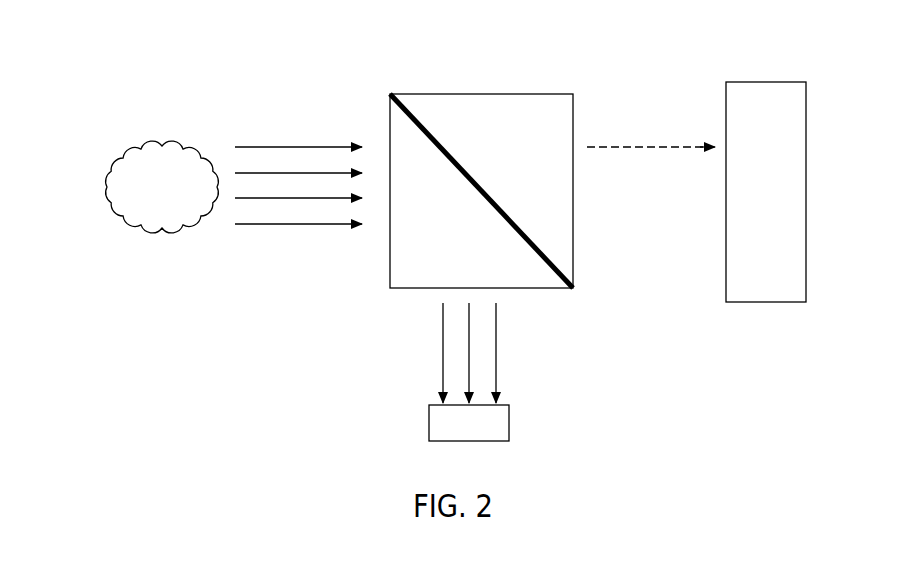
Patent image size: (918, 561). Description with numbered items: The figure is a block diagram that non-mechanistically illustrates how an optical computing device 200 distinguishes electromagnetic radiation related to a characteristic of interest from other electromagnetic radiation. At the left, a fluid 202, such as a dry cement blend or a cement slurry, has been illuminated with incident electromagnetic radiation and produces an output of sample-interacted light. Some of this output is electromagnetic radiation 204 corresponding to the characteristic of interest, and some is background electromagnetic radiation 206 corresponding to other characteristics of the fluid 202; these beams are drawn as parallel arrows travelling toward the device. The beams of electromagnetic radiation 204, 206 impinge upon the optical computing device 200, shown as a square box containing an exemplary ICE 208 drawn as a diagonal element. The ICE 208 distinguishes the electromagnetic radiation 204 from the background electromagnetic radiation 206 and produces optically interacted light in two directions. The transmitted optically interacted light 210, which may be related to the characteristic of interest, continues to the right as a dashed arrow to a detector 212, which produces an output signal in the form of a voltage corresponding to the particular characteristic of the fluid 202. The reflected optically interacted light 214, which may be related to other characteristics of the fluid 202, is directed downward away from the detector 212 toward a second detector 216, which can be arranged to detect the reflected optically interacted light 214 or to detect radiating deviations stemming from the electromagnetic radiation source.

The optical computing device 200 is at (448, 82).
The fluid 202 is at (112, 207).
The electromagnetic radiation 204 is at (304, 156).
The background electromagnetic radiation 206 is at (292, 218).
The ICE 208 is at (463, 167).
The transmitted optically interacted light 210 is at (626, 147).
The detector 212 is at (750, 206).
The reflected optically interacted light 214 is at (497, 339).
The second detector 216 is at (453, 433).